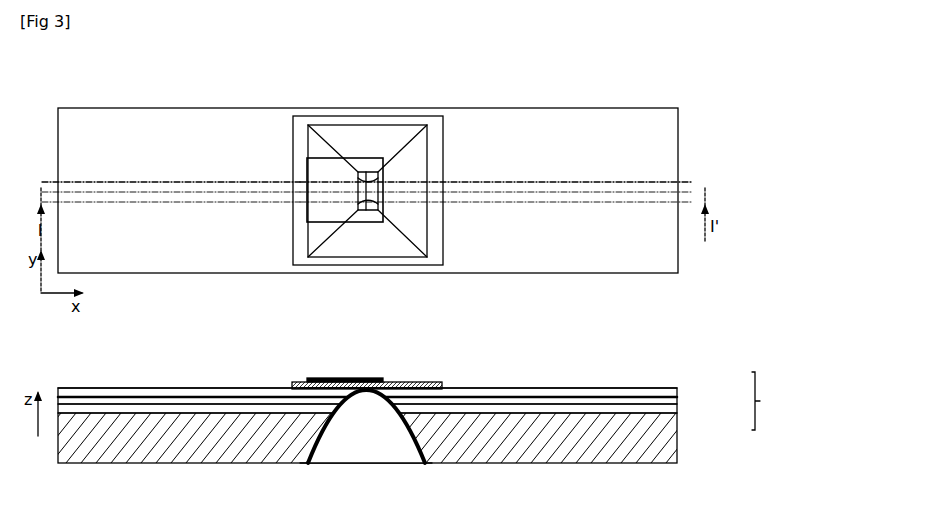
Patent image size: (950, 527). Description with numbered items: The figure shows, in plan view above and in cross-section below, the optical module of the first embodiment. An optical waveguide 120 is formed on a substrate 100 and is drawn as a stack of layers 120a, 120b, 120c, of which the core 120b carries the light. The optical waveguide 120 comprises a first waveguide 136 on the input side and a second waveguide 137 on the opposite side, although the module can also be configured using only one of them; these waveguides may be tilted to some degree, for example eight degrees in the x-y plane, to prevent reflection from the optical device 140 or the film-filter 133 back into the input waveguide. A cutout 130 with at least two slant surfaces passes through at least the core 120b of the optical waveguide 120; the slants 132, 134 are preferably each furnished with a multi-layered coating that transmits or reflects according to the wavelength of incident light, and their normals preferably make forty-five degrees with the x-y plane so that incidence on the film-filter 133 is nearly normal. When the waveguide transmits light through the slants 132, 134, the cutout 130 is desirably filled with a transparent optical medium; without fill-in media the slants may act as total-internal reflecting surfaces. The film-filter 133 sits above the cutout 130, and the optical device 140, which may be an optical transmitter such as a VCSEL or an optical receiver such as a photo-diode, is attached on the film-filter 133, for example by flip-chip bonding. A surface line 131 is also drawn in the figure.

The substrate 100 is at (680, 440).
The optical waveguide 120 is at (773, 401).
The first insulating layer 120a is at (680, 408).
The core 120b is at (680, 400).
The third insulating layer 120c is at (680, 393).
The cutout 130 is at (365, 464).
The lower electrode 131 is at (205, 388).
The slant 132 is at (341, 212).
The film-filter 133 is at (300, 244).
The slant 134 is at (390, 232).
The first waveguide 136 is at (140, 181).
The second waveguide 137 is at (595, 181).
The optical device 140 is at (367, 224).